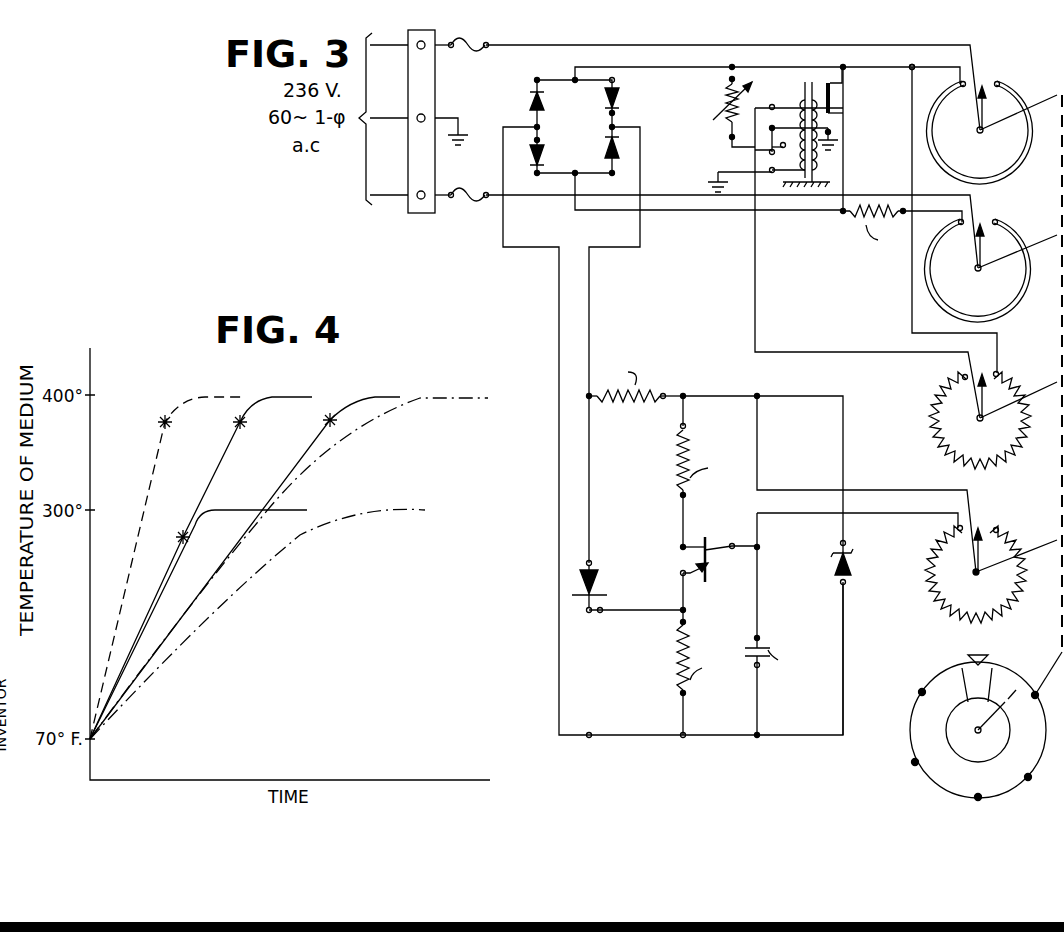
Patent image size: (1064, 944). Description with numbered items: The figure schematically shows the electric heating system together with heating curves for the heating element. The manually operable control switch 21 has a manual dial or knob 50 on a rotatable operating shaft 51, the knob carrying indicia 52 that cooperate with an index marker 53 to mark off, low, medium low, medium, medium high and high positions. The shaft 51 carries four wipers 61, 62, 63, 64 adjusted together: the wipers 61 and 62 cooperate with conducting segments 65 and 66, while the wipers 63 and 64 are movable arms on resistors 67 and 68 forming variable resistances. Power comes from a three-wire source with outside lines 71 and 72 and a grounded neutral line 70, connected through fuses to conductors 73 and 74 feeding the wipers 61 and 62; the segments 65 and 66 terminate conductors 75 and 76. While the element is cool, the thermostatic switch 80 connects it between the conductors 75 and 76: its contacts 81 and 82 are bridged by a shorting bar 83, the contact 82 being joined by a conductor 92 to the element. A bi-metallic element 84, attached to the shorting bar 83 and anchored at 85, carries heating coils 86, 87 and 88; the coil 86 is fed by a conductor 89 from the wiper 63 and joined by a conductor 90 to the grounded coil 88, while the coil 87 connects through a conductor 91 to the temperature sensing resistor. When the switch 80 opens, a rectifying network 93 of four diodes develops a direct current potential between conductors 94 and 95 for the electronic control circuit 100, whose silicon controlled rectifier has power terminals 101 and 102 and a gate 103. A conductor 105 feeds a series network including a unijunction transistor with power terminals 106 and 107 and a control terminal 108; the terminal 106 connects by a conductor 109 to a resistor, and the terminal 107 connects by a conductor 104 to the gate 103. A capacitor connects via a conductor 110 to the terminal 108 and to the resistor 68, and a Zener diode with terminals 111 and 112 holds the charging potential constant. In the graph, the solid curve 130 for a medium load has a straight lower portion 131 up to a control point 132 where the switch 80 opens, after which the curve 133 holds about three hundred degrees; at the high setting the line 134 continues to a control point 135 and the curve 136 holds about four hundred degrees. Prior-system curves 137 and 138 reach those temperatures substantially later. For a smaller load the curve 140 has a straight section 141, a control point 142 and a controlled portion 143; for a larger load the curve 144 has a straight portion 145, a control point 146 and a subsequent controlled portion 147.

In FIG. 3, the control switch 21 is at (880, 766).
In FIG. 3, the manual dial 50 is at (1038, 758).
In FIG. 3, the operating shaft 51 is at (980, 135).
In FIG. 3, the indicia 52 is at (912, 718).
In FIG. 3, the index marker 53 is at (972, 655).
In FIG. 3, the wiper 61 is at (980, 112).
In FIG. 3, the wiper 62 is at (980, 236).
In FIG. 3, the wiper 63 is at (990, 392).
In FIG. 3, the wiper 64 is at (988, 546).
In FIG. 3, the conducting segment 65 is at (1012, 182).
In FIG. 3, the conducting segment 66 is at (1014, 320).
In FIG. 3, the resistor 67 is at (1012, 462).
In FIG. 3, the resistor 68 is at (1010, 622).
In FIG. 3, the grounded neutral line 70 is at (458, 118).
In FIG. 3, the outside line 71 is at (452, 43).
In FIG. 3, the outside line 72 is at (462, 193).
In FIG. 3, the conductor 73 is at (540, 44).
In FIG. 3, the conductor 74 is at (512, 200).
In FIG. 3, the conductor 75 is at (614, 72).
In FIG. 3, the conductor 76 is at (940, 215).
In FIG. 3, the thermostatic switch 80 is at (812, 64).
In FIG. 3, the contact 81 is at (836, 90).
In FIG. 3, the contact 82 is at (845, 104).
In FIG. 3, the shorting bar 83 is at (750, 82).
In FIG. 3, the bi-metallic element 84 is at (800, 97).
In FIG. 3, the anchor 85 is at (822, 180).
In FIG. 3, the heating coil 86 is at (822, 124).
In FIG. 3, the heating coil 87 is at (834, 134).
In FIG. 3, the heating coil 88 is at (822, 164).
In FIG. 3, the conductor 89 is at (755, 290).
In FIG. 3, the conductor 90 is at (766, 132).
In FIG. 3, the conductor 91 is at (730, 144).
In FIG. 3, the conductor 92 is at (667, 218).
In FIG. 3, the rectifying network 93 is at (625, 105).
In FIG. 3, the conductor 94 is at (533, 121).
In FIG. 3, the conductor 95 is at (620, 124).
In FIG. 3, the electronic control circuit 100 is at (555, 585).
In FIG. 3, the power terminal 101 is at (592, 612).
In FIG. 3, the power terminal 102 is at (595, 560).
In FIG. 3, the control terminal 103 is at (600, 599).
In FIG. 3, the conductor 104 is at (650, 616).
In FIG. 3, the conductor 105 is at (724, 378).
In FIG. 3, the power terminal 106 is at (693, 542).
In FIG. 3, the power terminal 107 is at (700, 582).
In FIG. 3, the control terminal 108 is at (730, 566).
In FIG. 3, the conductor 109 is at (683, 510).
In FIG. 3, the conductor 110 is at (808, 512).
In FIG. 3, the terminal 111 is at (846, 550).
In FIG. 3, the terminal 112 is at (848, 576).
In FIG. 4, the heating curve 130 is at (183, 540).
In FIG. 4, the straight line portion 131 is at (158, 565).
In FIG. 4, the control point 132 is at (180, 535).
In FIG. 4, the heating curve 133 is at (232, 510).
In FIG. 4, the straight line 134 is at (215, 470).
In FIG. 4, the control point 135 is at (238, 422).
In FIG. 4, the heating curve 136 is at (272, 397).
In FIG. 4, the prior system heating curve 137 is at (262, 560).
In FIG. 4, the prior system heating curve 138 is at (320, 450).
In FIG. 4, the heating curve 140 is at (150, 473).
In FIG. 4, the straight line section 141 is at (142, 530).
In FIG. 4, the control point 142 is at (160, 420).
In FIG. 4, the curve portion 143 is at (200, 398).
In FIG. 4, the heating curve 144 is at (318, 443).
In FIG. 4, the straight portion 145 is at (256, 518).
In FIG. 4, the control point 146 is at (335, 400).
In FIG. 4, the temperature curve 147 is at (405, 398).